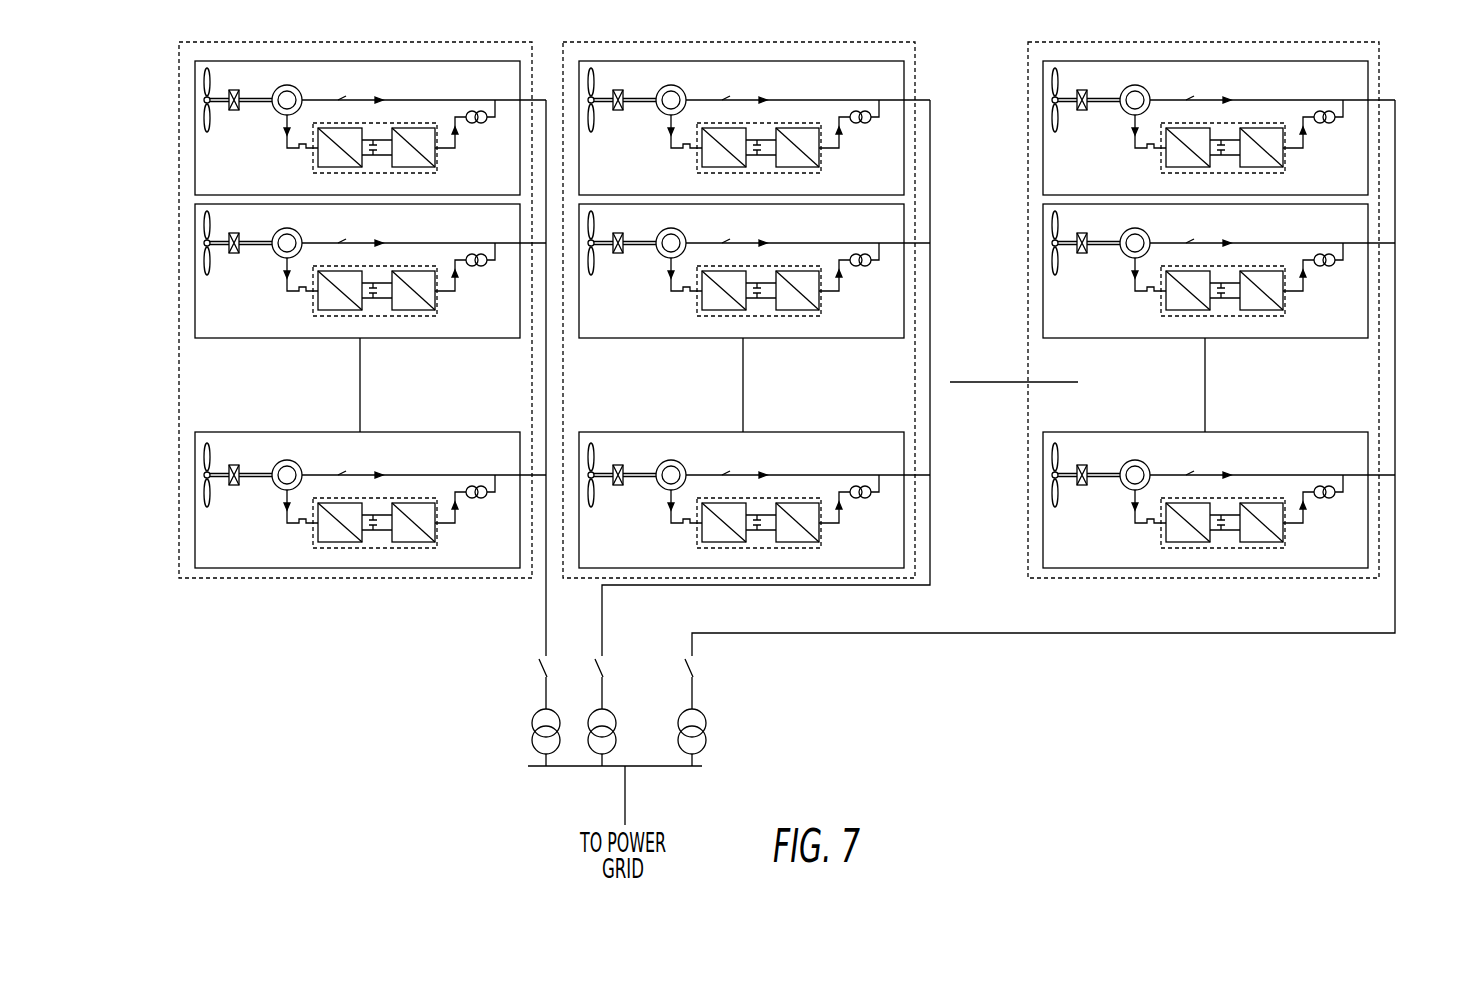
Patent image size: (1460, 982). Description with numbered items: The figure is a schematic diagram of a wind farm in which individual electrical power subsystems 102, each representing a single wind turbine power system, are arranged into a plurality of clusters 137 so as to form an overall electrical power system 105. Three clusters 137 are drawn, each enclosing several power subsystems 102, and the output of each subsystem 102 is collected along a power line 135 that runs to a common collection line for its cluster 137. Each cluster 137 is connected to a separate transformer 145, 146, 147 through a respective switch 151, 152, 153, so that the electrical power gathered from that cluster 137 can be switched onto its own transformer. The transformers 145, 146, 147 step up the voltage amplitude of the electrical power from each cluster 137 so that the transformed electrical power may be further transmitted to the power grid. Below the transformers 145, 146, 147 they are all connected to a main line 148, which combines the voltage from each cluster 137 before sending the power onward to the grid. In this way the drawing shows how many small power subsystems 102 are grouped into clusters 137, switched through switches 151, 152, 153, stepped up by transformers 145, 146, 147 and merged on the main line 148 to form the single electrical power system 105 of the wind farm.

The electrical power subsystem 102 is at (195, 148).
The electrical power system 105 is at (1403, 141).
The power output line 135 is at (902, 268).
The cluster 137 is at (178, 220).
The transformer 145 is at (533, 723).
The transformer 146 is at (604, 710).
The transformer 147 is at (695, 712).
The main line 148 is at (568, 768).
The switch 151 is at (529, 661).
The switch 152 is at (597, 660).
The circuit breaker 153 is at (684, 671).